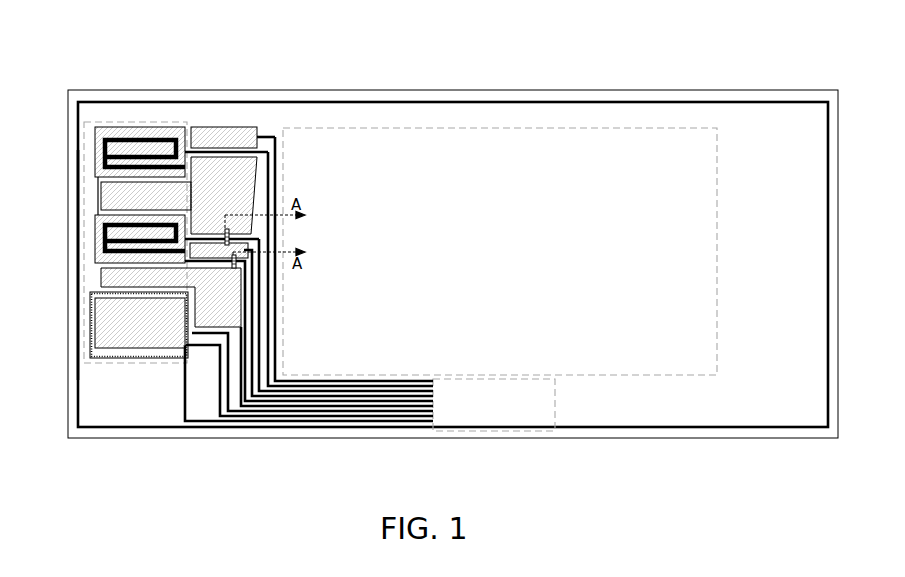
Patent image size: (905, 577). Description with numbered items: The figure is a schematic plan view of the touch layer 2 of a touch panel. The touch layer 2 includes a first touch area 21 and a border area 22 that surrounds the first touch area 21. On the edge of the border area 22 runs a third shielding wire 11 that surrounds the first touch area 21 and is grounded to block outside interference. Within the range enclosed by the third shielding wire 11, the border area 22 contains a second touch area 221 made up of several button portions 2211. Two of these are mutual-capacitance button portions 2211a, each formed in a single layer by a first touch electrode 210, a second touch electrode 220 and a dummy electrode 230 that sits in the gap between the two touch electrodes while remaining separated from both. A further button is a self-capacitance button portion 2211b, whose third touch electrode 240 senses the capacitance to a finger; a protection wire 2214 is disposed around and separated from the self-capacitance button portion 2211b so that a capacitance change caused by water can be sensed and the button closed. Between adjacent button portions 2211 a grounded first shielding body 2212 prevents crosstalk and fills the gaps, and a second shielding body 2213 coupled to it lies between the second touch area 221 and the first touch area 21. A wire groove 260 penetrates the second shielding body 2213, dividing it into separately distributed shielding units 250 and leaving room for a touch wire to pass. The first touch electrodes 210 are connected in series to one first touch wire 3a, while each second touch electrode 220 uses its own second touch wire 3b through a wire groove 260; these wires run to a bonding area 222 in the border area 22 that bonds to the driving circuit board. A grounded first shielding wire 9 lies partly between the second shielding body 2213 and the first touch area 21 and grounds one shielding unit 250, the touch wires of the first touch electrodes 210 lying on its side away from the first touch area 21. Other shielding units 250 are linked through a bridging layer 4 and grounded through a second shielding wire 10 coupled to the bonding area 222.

The touch layer 2 is at (65, 74).
The border area 22 is at (433, 97).
The third shielding wire 11 is at (78, 240).
The first touch area 21 is at (555, 152).
The bonding area 222 is at (495, 418).
The second touch area 221 is at (102, 121).
The button portion 2211 is at (126, 36).
The mutual-capacitance button portion 2211a is at (147, 46).
The self-capacitance button portion 2211b is at (35, 345).
The first touch electrode 210 is at (130, 127).
The dummy electrode 230 is at (160, 140).
The second touch electrode 220 is at (182, 150).
The first shielding body 2212 is at (100, 195).
The shielding unit 250 is at (223, 132).
The second shielding body 2213 is at (257, 108).
The wire groove 260 is at (275, 137).
The protection wire 2214 is at (90, 304).
The third touch electrode 240 is at (100, 332).
The first shielding wire 9 is at (276, 270).
The first touch wire 3a is at (257, 393).
The second touch wire 3b is at (267, 303).
The second shielding wire 10 is at (245, 362).
The bridging layer 4 is at (226, 246).